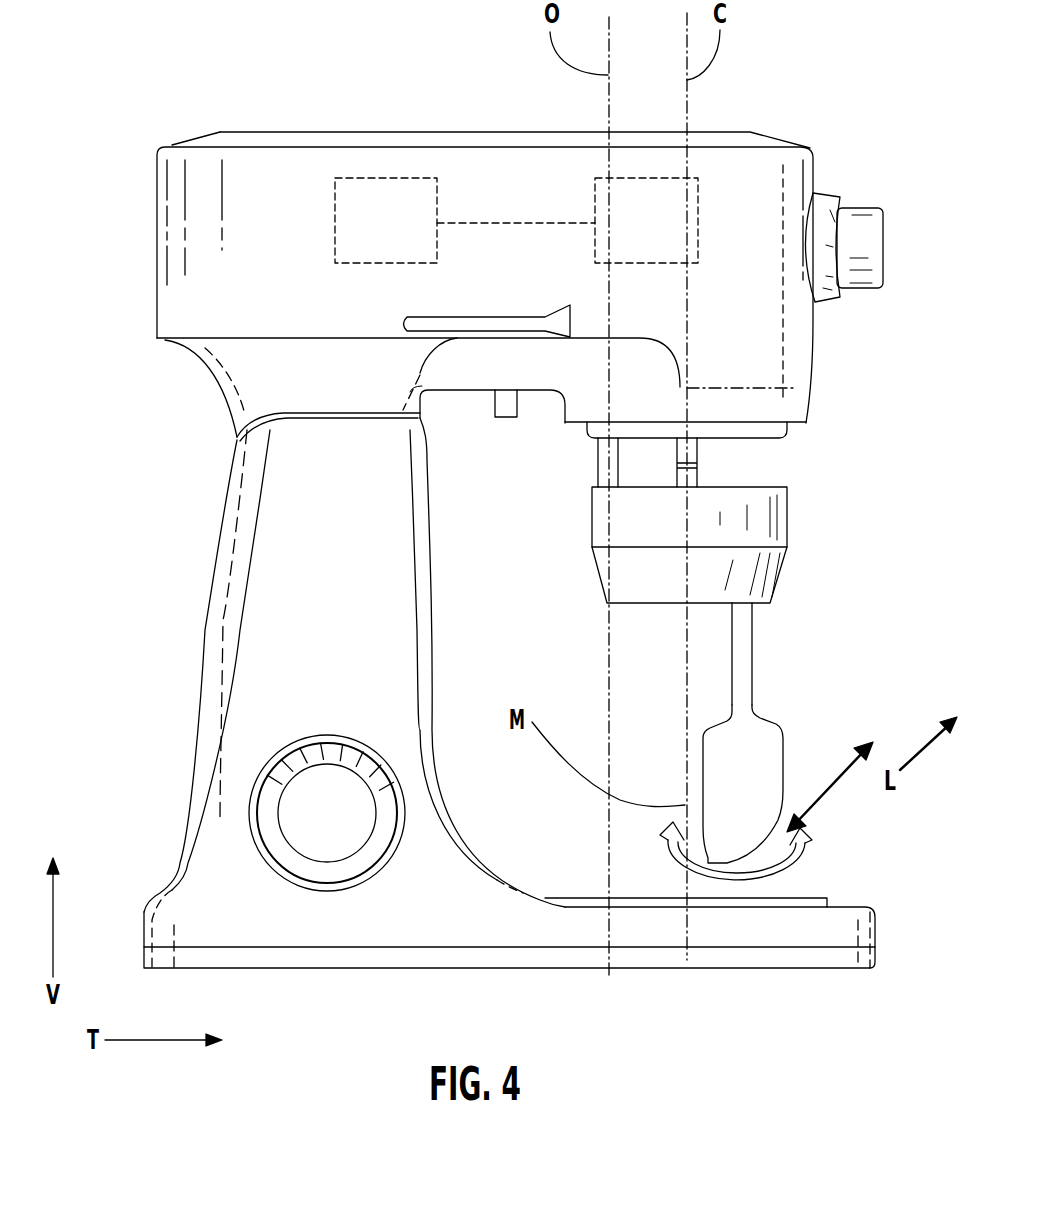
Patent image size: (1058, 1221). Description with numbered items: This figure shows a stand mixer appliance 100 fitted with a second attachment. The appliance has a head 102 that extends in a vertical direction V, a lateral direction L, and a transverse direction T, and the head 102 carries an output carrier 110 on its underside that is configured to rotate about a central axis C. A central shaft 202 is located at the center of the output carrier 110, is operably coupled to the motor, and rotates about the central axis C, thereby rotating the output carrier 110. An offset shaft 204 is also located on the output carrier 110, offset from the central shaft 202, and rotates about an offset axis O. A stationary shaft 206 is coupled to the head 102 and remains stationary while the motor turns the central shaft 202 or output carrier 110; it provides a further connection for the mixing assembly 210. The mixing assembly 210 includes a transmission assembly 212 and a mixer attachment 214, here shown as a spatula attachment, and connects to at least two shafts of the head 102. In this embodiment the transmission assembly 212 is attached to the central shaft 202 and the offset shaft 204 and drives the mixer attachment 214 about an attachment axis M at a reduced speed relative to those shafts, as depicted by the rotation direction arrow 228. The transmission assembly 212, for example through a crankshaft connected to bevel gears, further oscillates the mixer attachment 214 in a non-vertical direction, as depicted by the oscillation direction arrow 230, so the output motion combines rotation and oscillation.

The stand mixer appliance 100 is at (234, 66).
The head 102 is at (372, 132).
The output carrier 110 is at (800, 432).
The central shaft 202 is at (700, 458).
The offset shaft 204 is at (598, 463).
The stationary shaft 206 is at (495, 417).
The mixing assembly 210 is at (592, 626).
The transmission assembly 212 is at (787, 523).
The mixer attachment 214 is at (753, 693).
The rotation direction arrow 228 is at (743, 887).
The oscillation direction arrow 230 is at (845, 777).